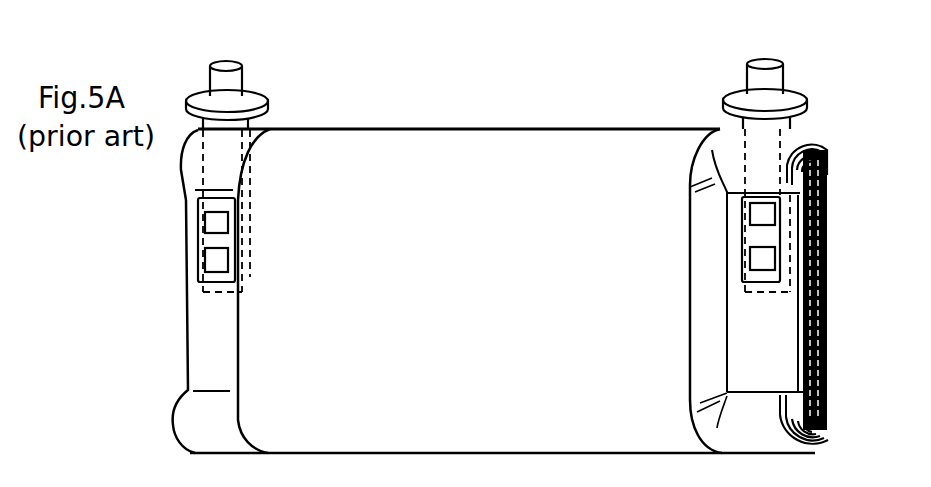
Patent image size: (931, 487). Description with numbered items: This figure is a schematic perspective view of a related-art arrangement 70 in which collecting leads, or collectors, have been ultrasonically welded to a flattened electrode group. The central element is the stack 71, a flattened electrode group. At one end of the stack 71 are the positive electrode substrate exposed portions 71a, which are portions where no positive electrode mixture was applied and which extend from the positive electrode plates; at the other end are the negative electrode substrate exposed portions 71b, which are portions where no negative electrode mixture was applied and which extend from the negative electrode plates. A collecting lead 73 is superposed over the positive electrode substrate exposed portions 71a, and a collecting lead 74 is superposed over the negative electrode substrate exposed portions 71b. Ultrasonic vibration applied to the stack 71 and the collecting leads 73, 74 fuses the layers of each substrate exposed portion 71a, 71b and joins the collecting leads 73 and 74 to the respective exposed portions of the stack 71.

The ink ribbon cassette (prior art) 70 is at (433, 108).
The stack 71 is at (545, 153).
The positive electrode substrate exposed portions 71a is at (777, 383).
The negative electrode substrate exposed portions 71b is at (200, 360).
The collecting lead 73 is at (797, 100).
The collecting lead 74 is at (260, 102).